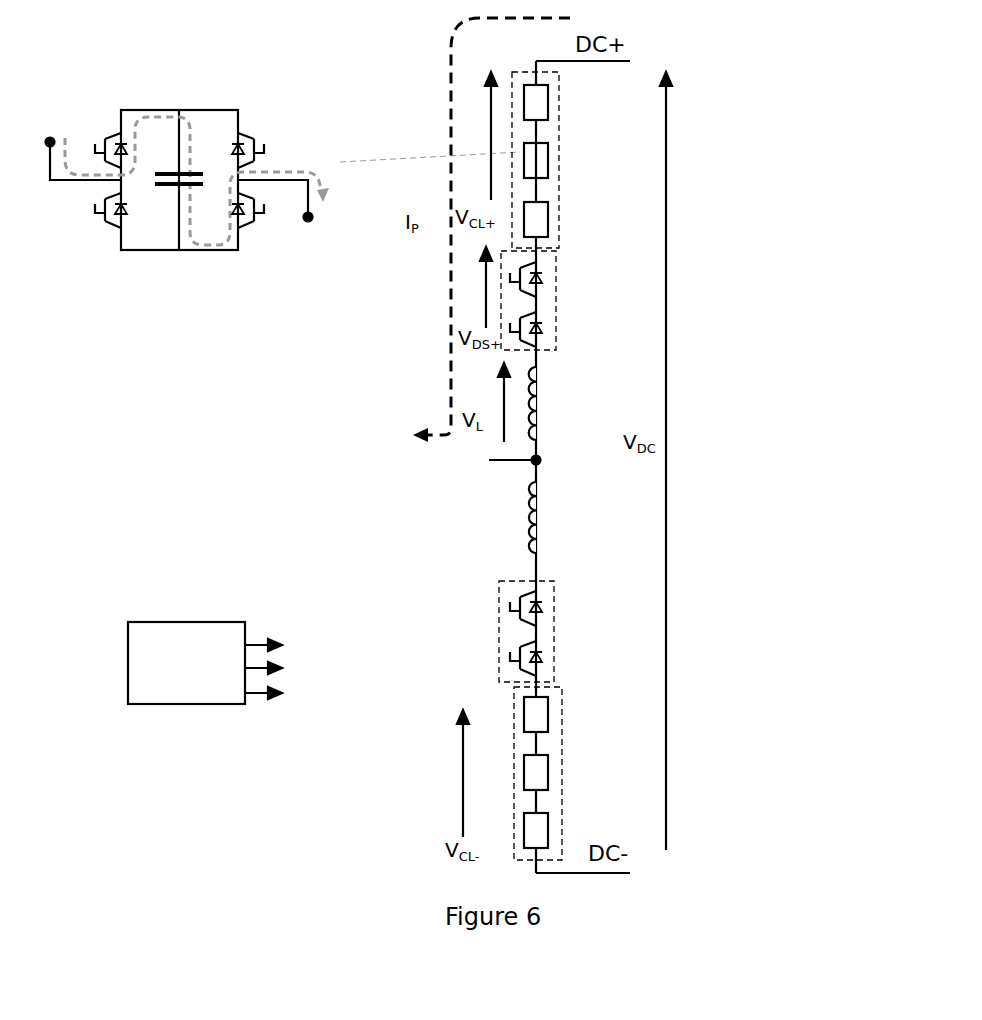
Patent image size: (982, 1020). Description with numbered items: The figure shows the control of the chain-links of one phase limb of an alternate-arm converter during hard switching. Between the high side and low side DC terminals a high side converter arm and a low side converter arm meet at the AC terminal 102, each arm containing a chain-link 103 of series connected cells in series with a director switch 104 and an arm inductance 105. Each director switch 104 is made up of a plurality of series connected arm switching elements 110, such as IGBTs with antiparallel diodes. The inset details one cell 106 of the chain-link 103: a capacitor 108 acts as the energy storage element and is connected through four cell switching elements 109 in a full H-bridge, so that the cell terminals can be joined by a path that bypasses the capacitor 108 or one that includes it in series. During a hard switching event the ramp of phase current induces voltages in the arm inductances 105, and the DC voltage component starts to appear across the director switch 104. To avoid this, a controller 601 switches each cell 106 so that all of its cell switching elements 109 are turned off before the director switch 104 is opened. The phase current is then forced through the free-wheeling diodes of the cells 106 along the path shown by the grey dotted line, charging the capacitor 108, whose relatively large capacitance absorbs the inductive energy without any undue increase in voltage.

The AC terminal 102 is at (553, 464).
The chain-link 103 is at (560, 118).
The director switch 104 is at (564, 462).
The arm inductance 105 is at (540, 420).
The cell 106 is at (145, 108).
The capacitor 108 is at (173, 187).
The cell switching element 109 is at (248, 132).
The arm switching element 110 is at (540, 340).
The controller 601 is at (205, 663).